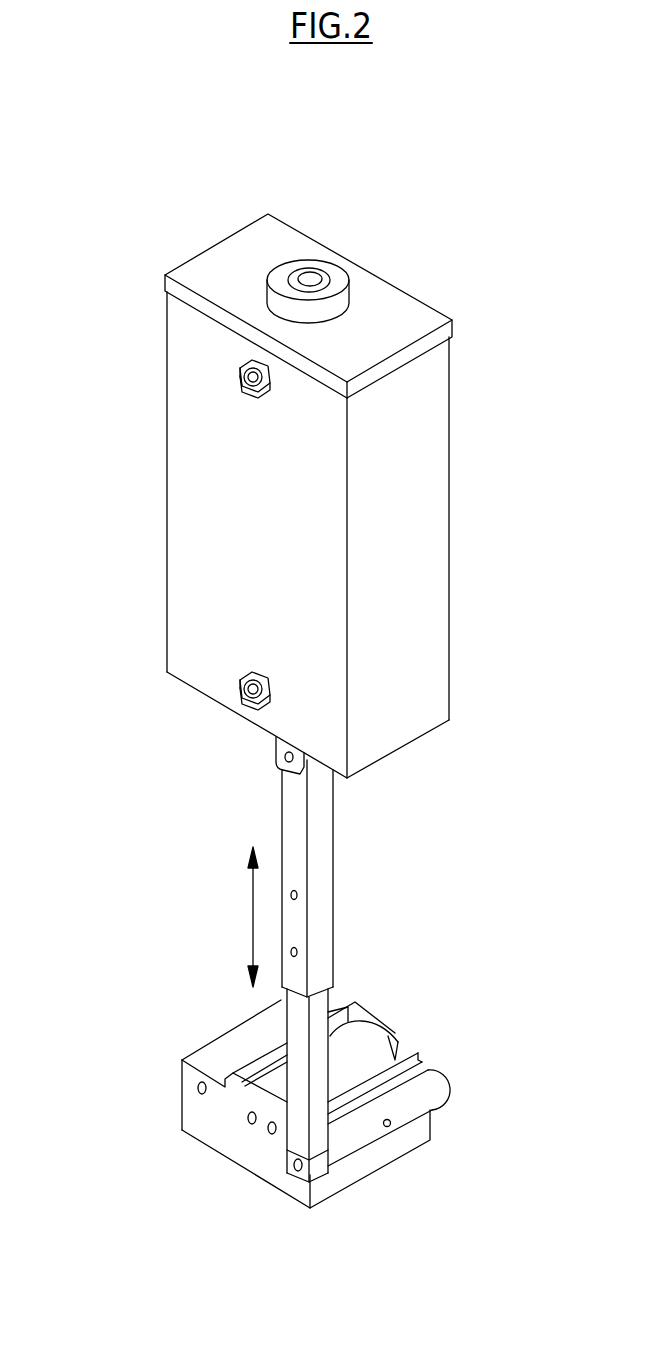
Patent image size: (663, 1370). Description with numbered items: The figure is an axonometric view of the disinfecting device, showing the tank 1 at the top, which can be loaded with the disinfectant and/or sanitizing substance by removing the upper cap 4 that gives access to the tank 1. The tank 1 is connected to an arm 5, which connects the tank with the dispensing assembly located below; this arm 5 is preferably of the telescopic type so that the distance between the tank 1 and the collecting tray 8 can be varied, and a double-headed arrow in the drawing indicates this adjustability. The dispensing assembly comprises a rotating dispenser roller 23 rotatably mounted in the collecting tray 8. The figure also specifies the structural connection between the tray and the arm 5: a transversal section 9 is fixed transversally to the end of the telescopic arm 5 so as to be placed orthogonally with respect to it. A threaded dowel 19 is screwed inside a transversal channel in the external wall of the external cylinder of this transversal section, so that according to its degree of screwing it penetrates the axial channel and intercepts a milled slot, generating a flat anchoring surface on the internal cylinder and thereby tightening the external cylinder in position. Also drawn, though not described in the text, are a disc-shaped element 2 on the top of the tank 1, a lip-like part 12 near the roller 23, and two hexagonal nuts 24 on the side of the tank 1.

The tank 1 is at (432, 528).
The mounting disk 2 is at (352, 308).
The upper cap 4 is at (316, 272).
The arm 5 is at (322, 983).
The collecting tray 8 is at (222, 1106).
The transversal section 9 is at (442, 1078).
The lip 12 is at (398, 1038).
The threaded dowel 19 is at (393, 1127).
The rotating dispenser roller 23 is at (358, 1038).
The nuts 24 is at (238, 368).